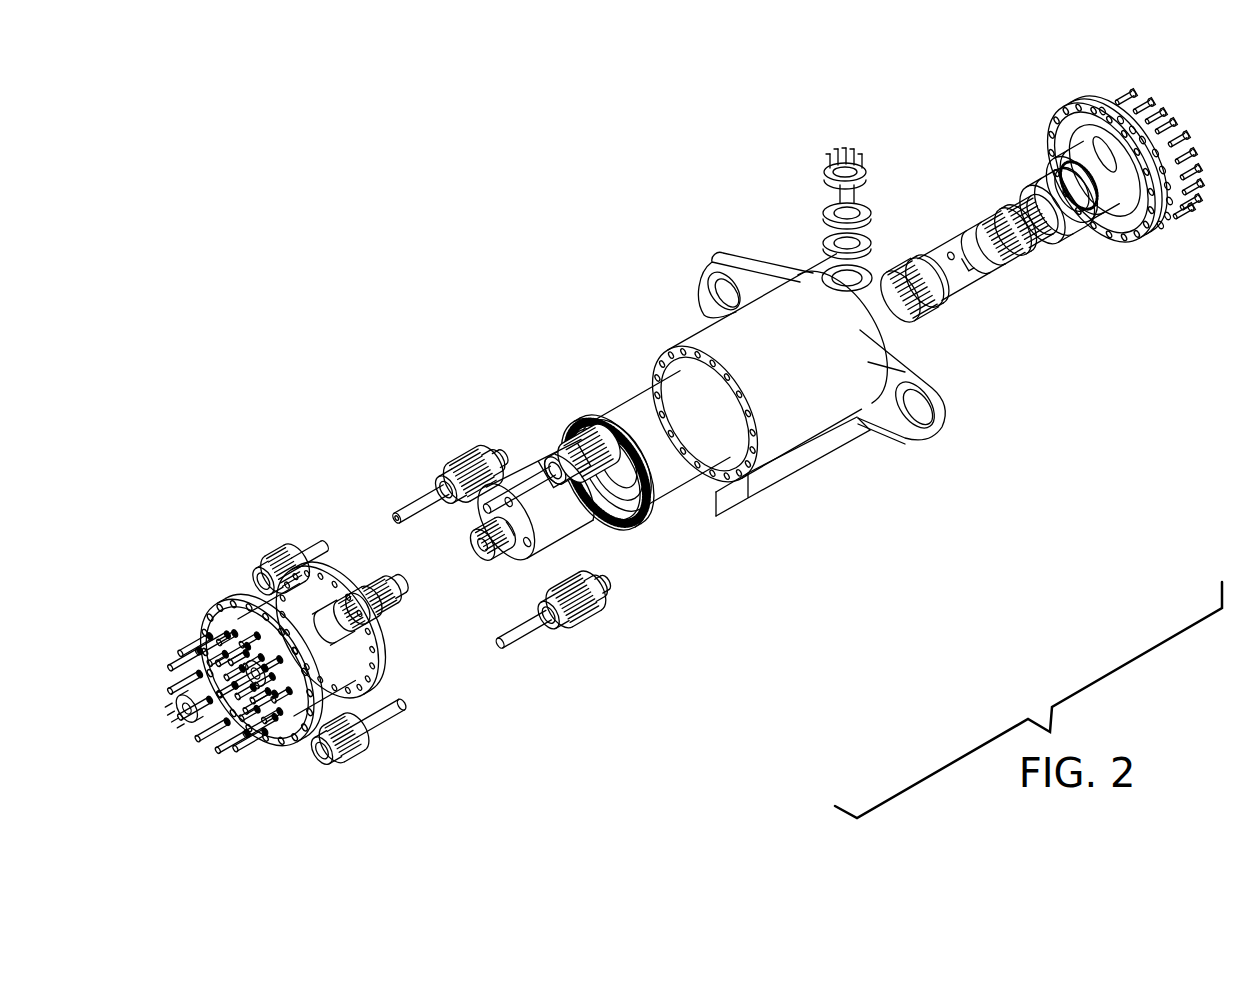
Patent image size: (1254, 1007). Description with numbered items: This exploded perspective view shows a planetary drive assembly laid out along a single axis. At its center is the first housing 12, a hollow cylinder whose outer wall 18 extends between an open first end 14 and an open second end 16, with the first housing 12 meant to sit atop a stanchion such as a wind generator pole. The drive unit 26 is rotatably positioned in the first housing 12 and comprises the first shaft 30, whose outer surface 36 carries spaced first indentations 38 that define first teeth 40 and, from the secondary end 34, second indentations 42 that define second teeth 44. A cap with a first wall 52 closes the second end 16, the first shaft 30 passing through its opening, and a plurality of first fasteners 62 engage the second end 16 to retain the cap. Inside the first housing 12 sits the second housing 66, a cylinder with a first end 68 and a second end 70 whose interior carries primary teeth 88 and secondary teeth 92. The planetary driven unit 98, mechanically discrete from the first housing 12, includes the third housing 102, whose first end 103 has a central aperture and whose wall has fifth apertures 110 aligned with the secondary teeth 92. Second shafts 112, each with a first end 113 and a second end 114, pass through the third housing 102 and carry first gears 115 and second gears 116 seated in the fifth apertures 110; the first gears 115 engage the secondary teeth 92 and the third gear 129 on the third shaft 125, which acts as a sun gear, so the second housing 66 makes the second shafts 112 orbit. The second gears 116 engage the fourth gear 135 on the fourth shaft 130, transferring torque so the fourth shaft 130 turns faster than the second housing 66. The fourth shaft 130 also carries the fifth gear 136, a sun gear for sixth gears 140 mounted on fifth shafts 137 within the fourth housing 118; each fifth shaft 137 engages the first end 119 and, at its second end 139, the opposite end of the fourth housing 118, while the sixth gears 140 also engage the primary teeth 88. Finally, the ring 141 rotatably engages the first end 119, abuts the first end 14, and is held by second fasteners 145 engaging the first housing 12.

The first housing 12 is at (798, 466).
The first end 14 is at (729, 513).
The second end 16 is at (864, 348).
The outer wall 18 is at (789, 332).
The drive unit 26 is at (959, 196).
The first shaft 30 is at (1014, 309).
The secondary end 34 is at (1048, 164).
The outer surface 36 is at (934, 206).
The first indentations 38 is at (914, 247).
The first teeth 40 is at (944, 306).
The second indentations 42 is at (1057, 268).
The second teeth 44 is at (1057, 209).
The first wall 52 is at (1103, 149).
The first fasteners 62 is at (1176, 151).
The second housing 66 is at (648, 401).
The first end 68 is at (705, 461).
The second end 70 is at (641, 366).
The primary teeth 88 is at (608, 417).
The secondary teeth 92 is at (607, 427).
The planetary driven unit 98 is at (469, 511).
The third housing 102 is at (542, 467).
The first end 103 is at (483, 575).
The fifth apertures 110 is at (572, 410).
The second shafts 112 is at (456, 529).
The first end 113 is at (353, 466).
The second end 114 is at (481, 413).
The first gears 115 is at (611, 623).
The second gears 116 is at (505, 531).
The fourth housing 118 is at (291, 619).
The first end 119 is at (238, 717).
The third shaft 125 is at (590, 494).
The third gear 129 is at (466, 554).
The fourth shaft 130 is at (359, 587).
The fourth gear 135 is at (399, 619).
The fifth gear 136 is at (339, 769).
The fifth shafts 137 is at (353, 632).
The second end 139 is at (451, 707).
The sixth gears 140 is at (261, 528).
The ring 141 is at (235, 662).
The second fasteners 145 is at (186, 694).